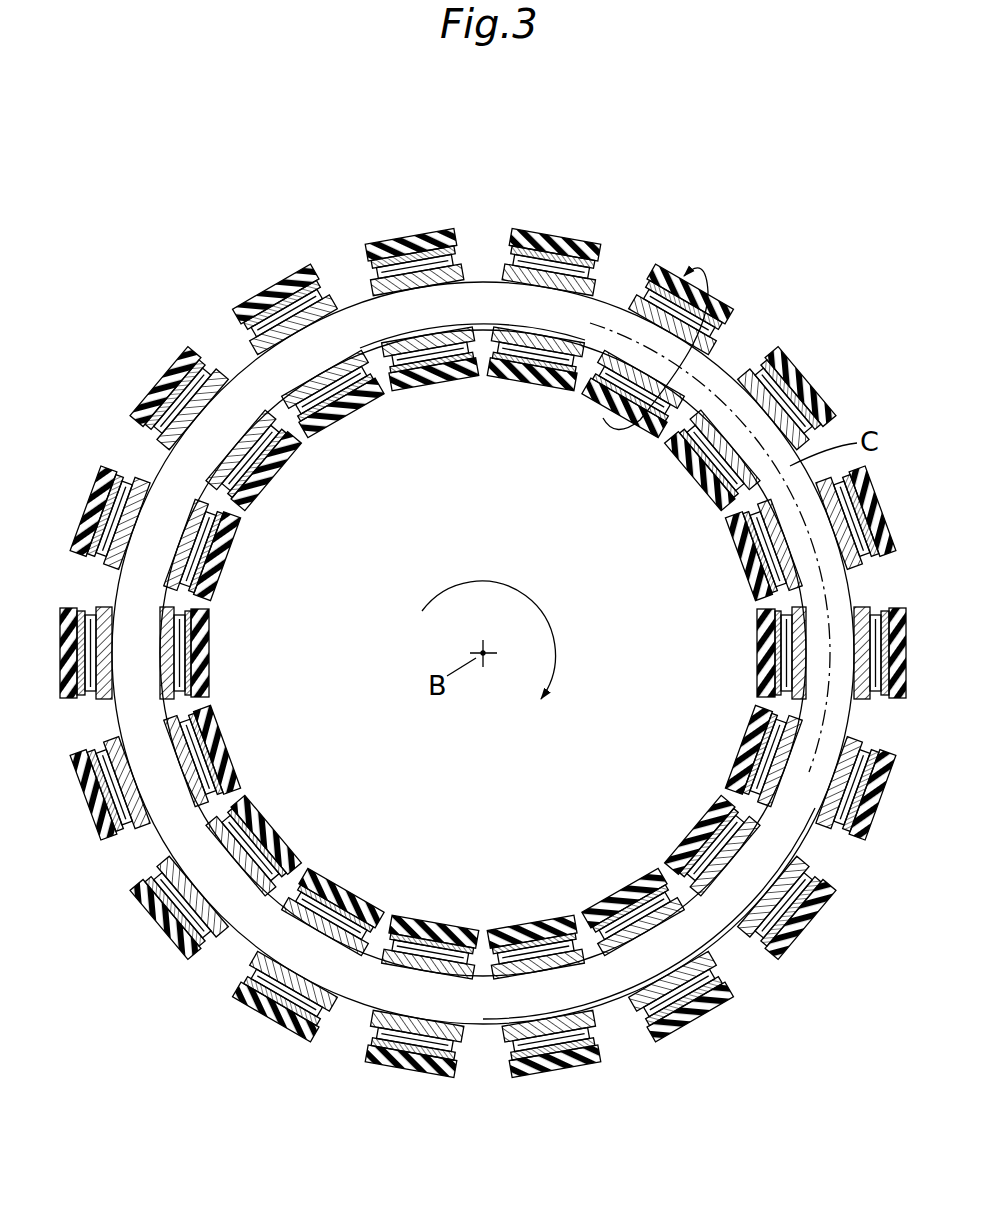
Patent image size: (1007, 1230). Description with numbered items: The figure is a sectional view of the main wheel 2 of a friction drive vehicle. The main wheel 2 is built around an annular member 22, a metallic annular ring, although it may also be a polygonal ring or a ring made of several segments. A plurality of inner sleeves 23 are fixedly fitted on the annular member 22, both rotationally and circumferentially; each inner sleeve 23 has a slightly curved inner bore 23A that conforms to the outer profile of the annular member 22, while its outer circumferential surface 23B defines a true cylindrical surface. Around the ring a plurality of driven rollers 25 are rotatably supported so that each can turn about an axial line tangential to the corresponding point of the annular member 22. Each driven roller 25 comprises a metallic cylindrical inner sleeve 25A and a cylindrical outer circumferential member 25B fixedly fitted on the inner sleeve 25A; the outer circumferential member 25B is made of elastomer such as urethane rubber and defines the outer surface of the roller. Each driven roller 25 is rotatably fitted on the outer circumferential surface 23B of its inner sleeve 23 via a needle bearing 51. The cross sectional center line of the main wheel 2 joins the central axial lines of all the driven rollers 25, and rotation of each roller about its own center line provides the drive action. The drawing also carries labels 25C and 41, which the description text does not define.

The main wheel 2 is at (483, 612).
The annular member 22 is at (711, 383).
The inner sleeve 23 is at (512, 337).
The inner bore 23A is at (480, 326).
The outer circumferential surface 23B is at (430, 418).
The driven roller 25 is at (428, 221).
The inner sleeve 25A is at (456, 258).
The outer circumferential member 25B is at (373, 251).
The coil winding portion 25C is at (411, 218).
The insulator 41 is at (588, 243).
The needle bearing 51 is at (447, 252).